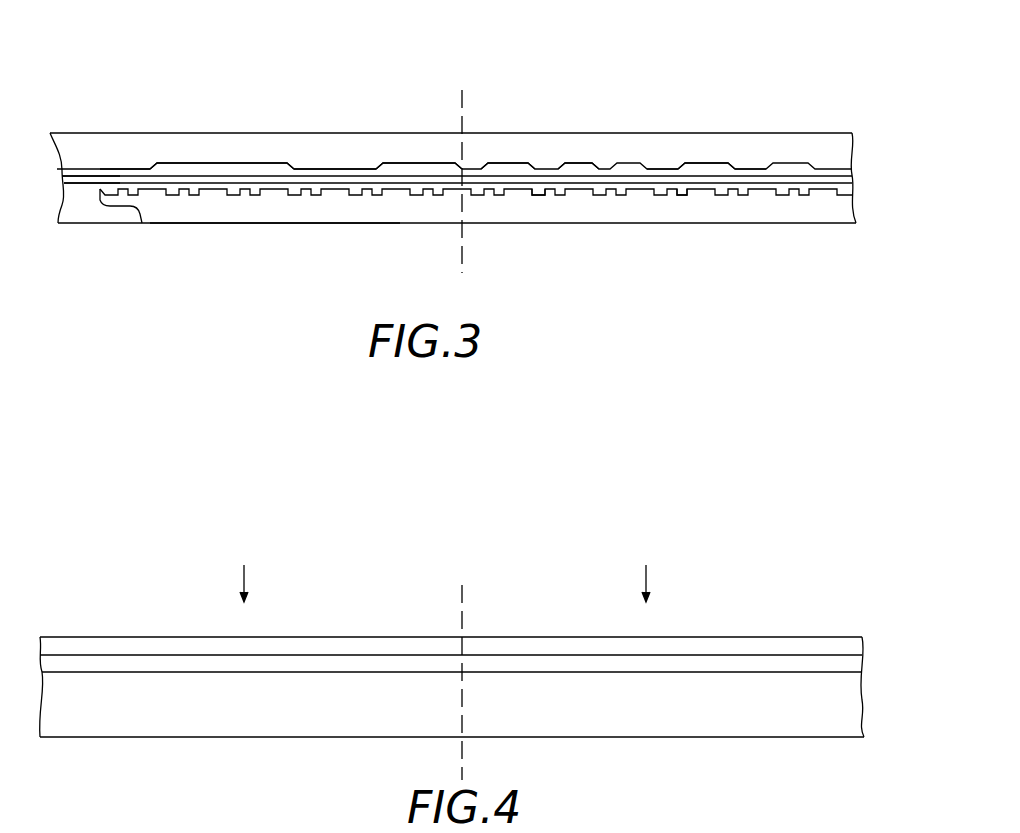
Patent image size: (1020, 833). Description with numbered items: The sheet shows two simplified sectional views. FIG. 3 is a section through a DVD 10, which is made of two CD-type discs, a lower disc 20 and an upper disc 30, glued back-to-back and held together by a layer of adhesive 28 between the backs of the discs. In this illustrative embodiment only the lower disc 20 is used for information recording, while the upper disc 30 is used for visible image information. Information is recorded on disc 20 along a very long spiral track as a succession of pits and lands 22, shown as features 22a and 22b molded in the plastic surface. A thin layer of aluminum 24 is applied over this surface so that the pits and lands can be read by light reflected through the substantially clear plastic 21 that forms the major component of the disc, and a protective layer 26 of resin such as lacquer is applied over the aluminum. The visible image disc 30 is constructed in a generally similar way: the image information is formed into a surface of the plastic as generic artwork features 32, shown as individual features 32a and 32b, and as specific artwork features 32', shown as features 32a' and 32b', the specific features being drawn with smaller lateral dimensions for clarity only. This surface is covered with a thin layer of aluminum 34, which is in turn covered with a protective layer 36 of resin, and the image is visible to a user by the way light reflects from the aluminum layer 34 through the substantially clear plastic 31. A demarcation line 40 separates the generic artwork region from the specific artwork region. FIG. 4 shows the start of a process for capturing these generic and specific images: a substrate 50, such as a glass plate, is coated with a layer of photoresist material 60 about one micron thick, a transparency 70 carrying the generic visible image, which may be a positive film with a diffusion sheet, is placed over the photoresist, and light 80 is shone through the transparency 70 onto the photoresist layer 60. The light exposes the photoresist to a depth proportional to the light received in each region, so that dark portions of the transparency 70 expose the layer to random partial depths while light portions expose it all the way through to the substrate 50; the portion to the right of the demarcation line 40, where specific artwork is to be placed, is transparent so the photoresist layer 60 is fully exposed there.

In FIG. 3, the DVD 10 is at (840, 68).
In FIG. 3, the lower disc 20 is at (855, 177).
In FIG. 3, the substantially clear plastic 21 is at (245, 212).
In FIG. 3, the pits and lands 22 is at (476, 251).
In FIG. 3, the pits 22a is at (696, 228).
In FIG. 3, the lands 22b is at (558, 195).
In FIG. 3, the layer of aluminum 24 is at (137, 224).
In FIG. 3, the protective layer 26 is at (98, 190).
In FIG. 3, the layer of adhesive 28 is at (76, 180).
In FIG. 3, the upper disc 30 is at (855, 133).
In FIG. 3, the substantially clear plastic 31 is at (830, 143).
In FIG. 3, the generic artwork features 32 is at (281, 84).
In FIG. 3, the specific artwork features 32' is at (656, 95).
In FIG. 3, the generic artwork feature 32a is at (238, 127).
In FIG. 3, the specific artwork feature 32a' is at (734, 129).
In FIG. 3, the generic artwork feature 32b is at (306, 116).
In FIG. 3, the specific artwork feature 32b' is at (628, 129).
In FIG. 3, the layer of aluminum 34 is at (77, 178).
In FIG. 3, the protective layer 36 is at (96, 187).
In FIG. 3, the demarcation line 40 is at (462, 258).
In FIG. 4, the demarcation line 40 is at (463, 622).
In FIG. 4, the substrate 50 is at (795, 722).
In FIG. 4, the layer of photoresist material 60 is at (827, 662).
In FIG. 4, the transparency 70 is at (750, 647).
In FIG. 4, the light 80 is at (461, 575).